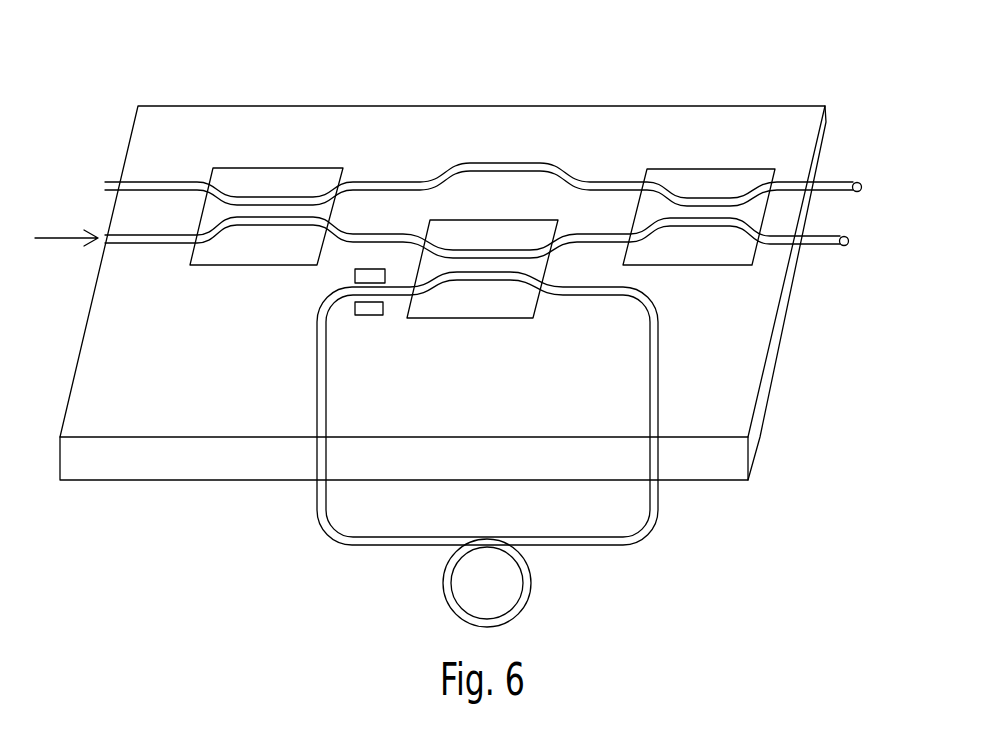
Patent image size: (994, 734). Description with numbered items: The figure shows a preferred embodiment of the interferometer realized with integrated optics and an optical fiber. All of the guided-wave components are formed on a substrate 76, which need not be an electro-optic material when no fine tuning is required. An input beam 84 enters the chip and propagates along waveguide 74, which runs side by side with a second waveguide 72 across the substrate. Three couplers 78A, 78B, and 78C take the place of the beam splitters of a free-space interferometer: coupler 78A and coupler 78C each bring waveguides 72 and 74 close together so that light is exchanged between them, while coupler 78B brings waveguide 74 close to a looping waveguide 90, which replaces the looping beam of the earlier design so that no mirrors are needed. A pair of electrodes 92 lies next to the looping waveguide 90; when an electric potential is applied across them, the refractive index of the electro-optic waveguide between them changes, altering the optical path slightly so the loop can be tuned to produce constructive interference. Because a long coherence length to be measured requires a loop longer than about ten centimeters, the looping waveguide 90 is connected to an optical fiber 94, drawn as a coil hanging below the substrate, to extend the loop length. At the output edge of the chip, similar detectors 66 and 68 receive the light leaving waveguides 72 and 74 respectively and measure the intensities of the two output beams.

The substrate 76 is at (408, 106).
The waveguide 72 is at (166, 180).
The waveguide 74 is at (165, 245).
The detector 66 is at (838, 180).
The detector 68 is at (820, 247).
The input beam 84 is at (62, 232).
The coupler 78A is at (258, 275).
The coupler 78B is at (503, 326).
The coupler 78C is at (732, 272).
The pair of electrodes 92 is at (377, 317).
The looping waveguide 90 is at (659, 371).
The optical fiber 94 is at (577, 547).